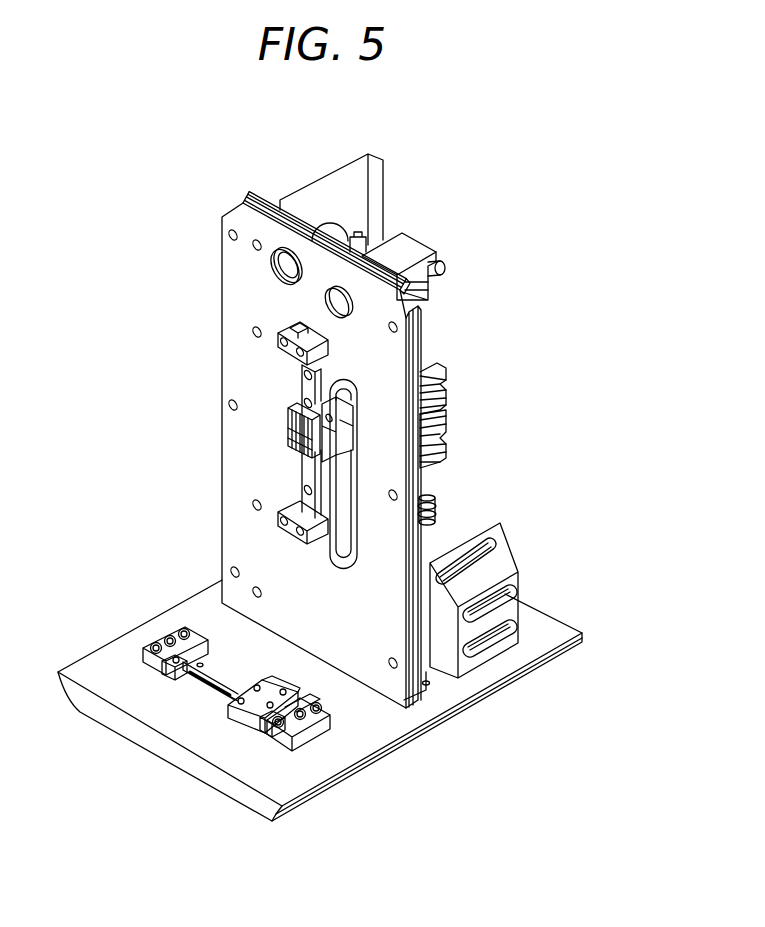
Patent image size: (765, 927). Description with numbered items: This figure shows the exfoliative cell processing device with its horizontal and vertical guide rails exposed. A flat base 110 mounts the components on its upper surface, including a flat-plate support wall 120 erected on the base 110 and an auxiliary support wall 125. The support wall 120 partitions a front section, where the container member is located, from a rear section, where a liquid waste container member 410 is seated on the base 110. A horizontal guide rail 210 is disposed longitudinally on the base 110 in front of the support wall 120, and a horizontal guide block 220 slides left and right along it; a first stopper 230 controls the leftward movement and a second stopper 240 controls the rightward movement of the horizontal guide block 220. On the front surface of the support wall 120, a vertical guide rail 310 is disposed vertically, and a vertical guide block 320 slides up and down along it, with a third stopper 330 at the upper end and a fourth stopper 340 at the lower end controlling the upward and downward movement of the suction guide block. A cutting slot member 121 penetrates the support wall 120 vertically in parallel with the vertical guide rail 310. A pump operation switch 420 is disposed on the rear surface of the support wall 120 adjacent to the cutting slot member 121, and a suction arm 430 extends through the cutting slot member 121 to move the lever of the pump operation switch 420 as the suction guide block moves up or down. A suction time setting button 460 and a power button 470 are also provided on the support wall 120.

The base 110 is at (122, 672).
The support wall 120 is at (366, 333).
The cutting slot member 121 is at (433, 530).
The auxiliary support wall 125 is at (314, 192).
The horizontal guide rail 210 is at (203, 677).
The horizontal guide block 220 is at (238, 713).
The first stopper 230 is at (166, 674).
The second stopper 240 is at (266, 730).
The vertical guide rail 310 is at (300, 475).
The vertical guide block 320 is at (288, 431).
The third stopper 330 is at (290, 354).
The fourth stopper 340 is at (293, 532).
The liquid waste container member 410 is at (500, 569).
The pump operation switch 420 is at (445, 433).
The suction arm 430 is at (442, 389).
The suction time setting button 460 is at (333, 302).
The power button 470 is at (282, 268).